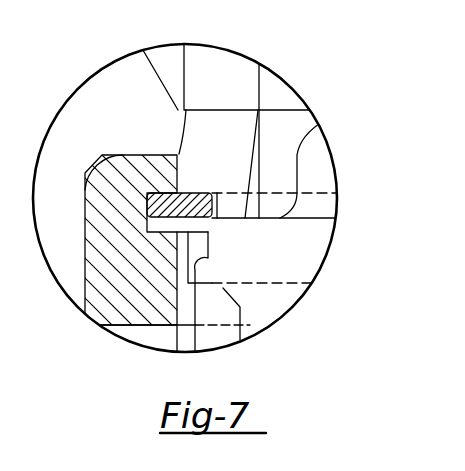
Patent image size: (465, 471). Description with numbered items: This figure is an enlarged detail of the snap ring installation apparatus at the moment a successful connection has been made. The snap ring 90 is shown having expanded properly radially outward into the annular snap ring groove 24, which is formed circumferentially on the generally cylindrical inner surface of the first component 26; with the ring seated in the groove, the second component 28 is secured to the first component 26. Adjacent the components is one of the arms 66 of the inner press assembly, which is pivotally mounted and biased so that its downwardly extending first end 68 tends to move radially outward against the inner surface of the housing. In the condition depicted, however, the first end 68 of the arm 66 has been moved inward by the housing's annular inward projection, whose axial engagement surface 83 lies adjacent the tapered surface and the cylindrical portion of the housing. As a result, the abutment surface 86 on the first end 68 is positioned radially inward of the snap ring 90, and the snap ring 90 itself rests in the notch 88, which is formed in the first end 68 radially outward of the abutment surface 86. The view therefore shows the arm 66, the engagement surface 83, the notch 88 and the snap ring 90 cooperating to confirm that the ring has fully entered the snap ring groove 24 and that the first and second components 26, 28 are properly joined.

The snap ring groove 24 is at (165, 223).
The first component 26 is at (86, 248).
The second component 28 is at (287, 268).
The arm 66 is at (183, 65).
The first end 68 is at (183, 83).
The engagement surface 83 is at (85, 189).
The abutment surface 86 is at (222, 220).
The notch 88 is at (200, 193).
The snap ring 90 is at (204, 218).